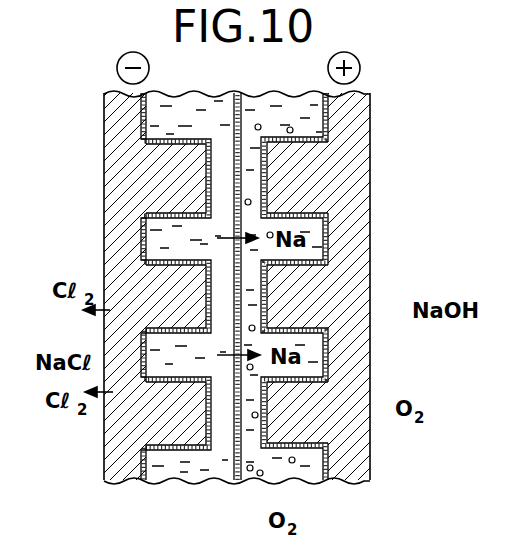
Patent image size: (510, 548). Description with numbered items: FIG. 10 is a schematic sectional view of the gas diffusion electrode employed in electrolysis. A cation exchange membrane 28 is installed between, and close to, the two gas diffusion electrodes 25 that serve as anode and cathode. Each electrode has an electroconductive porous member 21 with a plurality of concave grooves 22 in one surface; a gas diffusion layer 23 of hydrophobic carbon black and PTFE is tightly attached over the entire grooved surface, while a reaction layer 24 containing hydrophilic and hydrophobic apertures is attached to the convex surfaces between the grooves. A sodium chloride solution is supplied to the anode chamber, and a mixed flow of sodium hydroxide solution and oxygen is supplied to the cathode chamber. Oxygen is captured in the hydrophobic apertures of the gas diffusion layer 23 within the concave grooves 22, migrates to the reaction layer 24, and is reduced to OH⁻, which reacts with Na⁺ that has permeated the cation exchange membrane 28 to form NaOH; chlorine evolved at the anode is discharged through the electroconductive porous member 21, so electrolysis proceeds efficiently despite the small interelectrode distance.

The electroconductive porous member 21 is at (121, 466).
The concave grooves 22 is at (148, 233).
The gas diffusion layer 23 is at (158, 432).
The reaction layer 24 is at (270, 290).
The gas diffusion electrodes 25 is at (98, 154).
The cation exchange membrane 28 is at (251, 270).